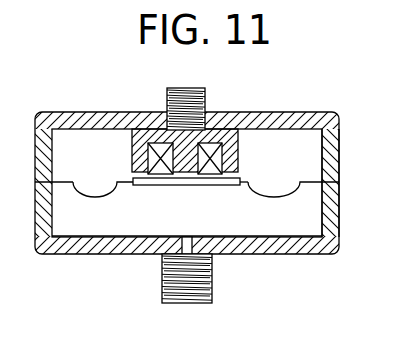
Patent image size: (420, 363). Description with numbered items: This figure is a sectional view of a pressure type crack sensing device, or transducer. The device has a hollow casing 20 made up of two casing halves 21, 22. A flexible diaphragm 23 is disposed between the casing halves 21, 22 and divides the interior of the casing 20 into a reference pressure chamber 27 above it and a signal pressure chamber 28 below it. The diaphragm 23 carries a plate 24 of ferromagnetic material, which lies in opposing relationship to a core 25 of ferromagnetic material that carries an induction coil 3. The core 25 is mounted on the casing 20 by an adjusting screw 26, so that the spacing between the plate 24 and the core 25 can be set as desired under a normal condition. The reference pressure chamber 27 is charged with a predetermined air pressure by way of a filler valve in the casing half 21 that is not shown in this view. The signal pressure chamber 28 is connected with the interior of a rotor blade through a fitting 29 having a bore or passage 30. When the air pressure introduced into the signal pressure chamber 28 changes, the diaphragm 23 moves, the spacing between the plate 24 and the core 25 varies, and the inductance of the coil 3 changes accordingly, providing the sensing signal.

The hollow casing 20 is at (325, 94).
The casing half 21 is at (339, 141).
The casing half 22 is at (337, 217).
The flexible diaphragm 23 is at (286, 195).
The plate 24 is at (183, 185).
The core 25 is at (182, 143).
The induction coil 3 is at (218, 157).
The adjusting screw 26 is at (205, 99).
The reference pressure chamber 27 is at (77, 140).
The signal pressure chamber 28 is at (107, 228).
The fitting 29 is at (212, 271).
The bore 30 is at (184, 276).